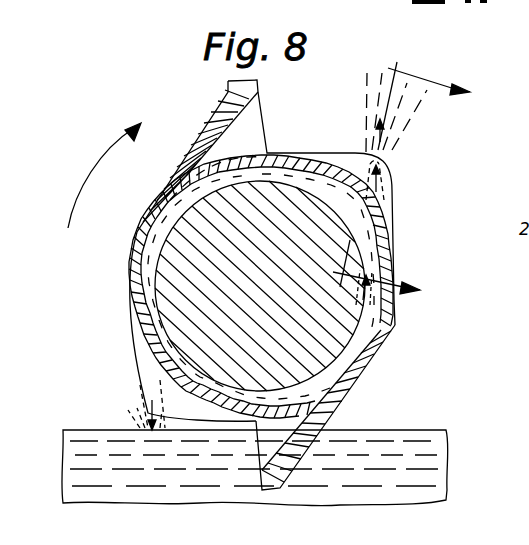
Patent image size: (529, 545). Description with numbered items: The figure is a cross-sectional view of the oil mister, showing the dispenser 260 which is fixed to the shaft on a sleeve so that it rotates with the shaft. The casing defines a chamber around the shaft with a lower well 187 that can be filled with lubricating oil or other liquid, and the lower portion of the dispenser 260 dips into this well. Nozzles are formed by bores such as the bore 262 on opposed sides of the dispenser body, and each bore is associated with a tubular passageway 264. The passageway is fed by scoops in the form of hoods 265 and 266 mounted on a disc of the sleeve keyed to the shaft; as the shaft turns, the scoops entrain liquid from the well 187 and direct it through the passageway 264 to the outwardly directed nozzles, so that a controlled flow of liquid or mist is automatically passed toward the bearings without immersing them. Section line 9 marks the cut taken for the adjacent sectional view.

The lower well 187 is at (444, 468).
The dispenser 260 is at (396, 245).
The bore 262 is at (384, 182).
The tubular passageway 264 is at (142, 284).
The hood 265 is at (340, 422).
The hood 266 is at (203, 131).
The section line 9- 9 is at (410, 188).